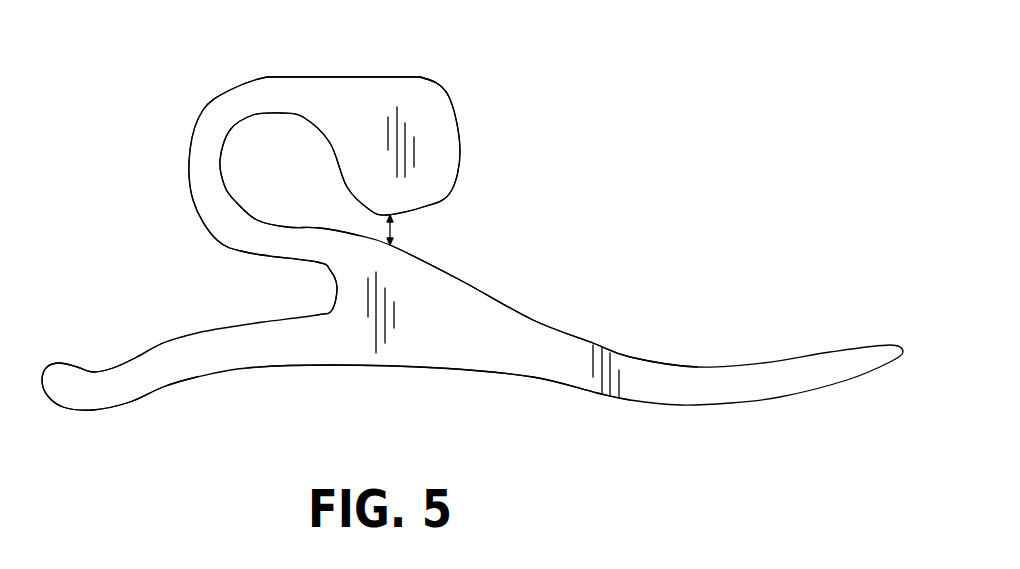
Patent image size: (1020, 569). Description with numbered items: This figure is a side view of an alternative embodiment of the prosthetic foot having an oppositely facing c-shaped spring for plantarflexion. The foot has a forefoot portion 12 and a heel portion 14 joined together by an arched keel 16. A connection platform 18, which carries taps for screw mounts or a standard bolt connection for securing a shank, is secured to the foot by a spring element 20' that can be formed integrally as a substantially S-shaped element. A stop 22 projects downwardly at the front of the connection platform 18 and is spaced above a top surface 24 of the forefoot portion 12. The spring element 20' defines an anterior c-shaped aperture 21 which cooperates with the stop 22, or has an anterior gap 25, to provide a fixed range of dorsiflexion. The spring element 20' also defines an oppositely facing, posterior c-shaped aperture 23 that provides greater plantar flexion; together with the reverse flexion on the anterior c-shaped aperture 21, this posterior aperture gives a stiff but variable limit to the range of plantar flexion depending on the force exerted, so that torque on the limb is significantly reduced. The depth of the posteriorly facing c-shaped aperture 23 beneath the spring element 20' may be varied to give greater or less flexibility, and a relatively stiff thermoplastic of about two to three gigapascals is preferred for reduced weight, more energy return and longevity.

The forefoot portion 12 is at (670, 367).
The heel portion 14 is at (143, 387).
The arched keel 16 is at (457, 370).
The connection platform 18 is at (287, 92).
The spring element 20' is at (191, 169).
The c-shaped aperture 21 is at (245, 148).
The stop 22 is at (438, 118).
The oppositely facing c-shaped aperture 23 is at (307, 290).
The top surface 24 is at (462, 282).
The anterior gap 25 is at (392, 232).